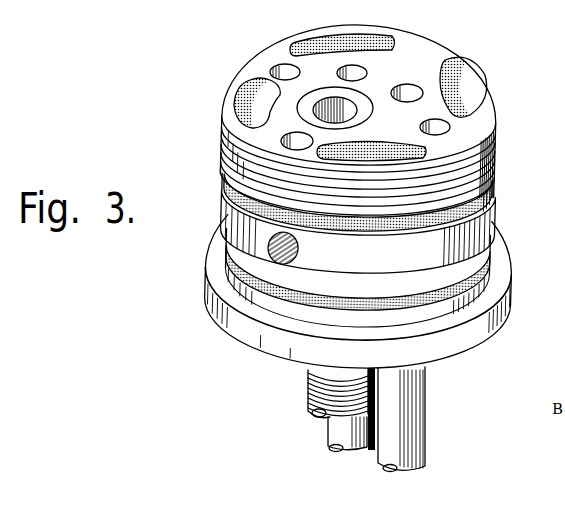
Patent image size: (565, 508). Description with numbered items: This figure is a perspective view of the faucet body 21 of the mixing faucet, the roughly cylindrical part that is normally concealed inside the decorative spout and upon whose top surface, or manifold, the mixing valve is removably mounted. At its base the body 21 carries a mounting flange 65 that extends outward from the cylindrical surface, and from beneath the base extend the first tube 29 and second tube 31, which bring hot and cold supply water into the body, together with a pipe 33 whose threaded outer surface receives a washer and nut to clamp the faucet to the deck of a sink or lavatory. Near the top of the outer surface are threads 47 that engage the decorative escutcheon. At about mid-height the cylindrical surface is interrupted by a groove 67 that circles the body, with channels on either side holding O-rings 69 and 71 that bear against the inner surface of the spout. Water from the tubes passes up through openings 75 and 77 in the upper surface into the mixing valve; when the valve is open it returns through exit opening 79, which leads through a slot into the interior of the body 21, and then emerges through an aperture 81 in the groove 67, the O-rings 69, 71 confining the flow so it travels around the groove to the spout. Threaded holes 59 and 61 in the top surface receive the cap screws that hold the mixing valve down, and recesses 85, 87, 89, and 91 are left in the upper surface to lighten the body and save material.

The body 21 is at (491, 48).
The first tube 29 is at (428, 420).
The second tube 31 is at (328, 437).
The pipe 33 is at (308, 391).
The threads 47 is at (498, 146).
The threaded hole 59 is at (276, 65).
The threaded hole 61 is at (450, 128).
The mounting flange 65 is at (512, 289).
The groove 67 is at (495, 220).
The O-ring 69 is at (341, 234).
The O-ring 71 is at (428, 292).
The opening 75 is at (369, 72).
The opening 77 is at (417, 85).
The exit opening 79 is at (333, 107).
The aperture 81 is at (298, 255).
The recess 85 is at (470, 83).
The recess 87 is at (330, 38).
The recess 89 is at (235, 98).
The recess 91 is at (371, 151).